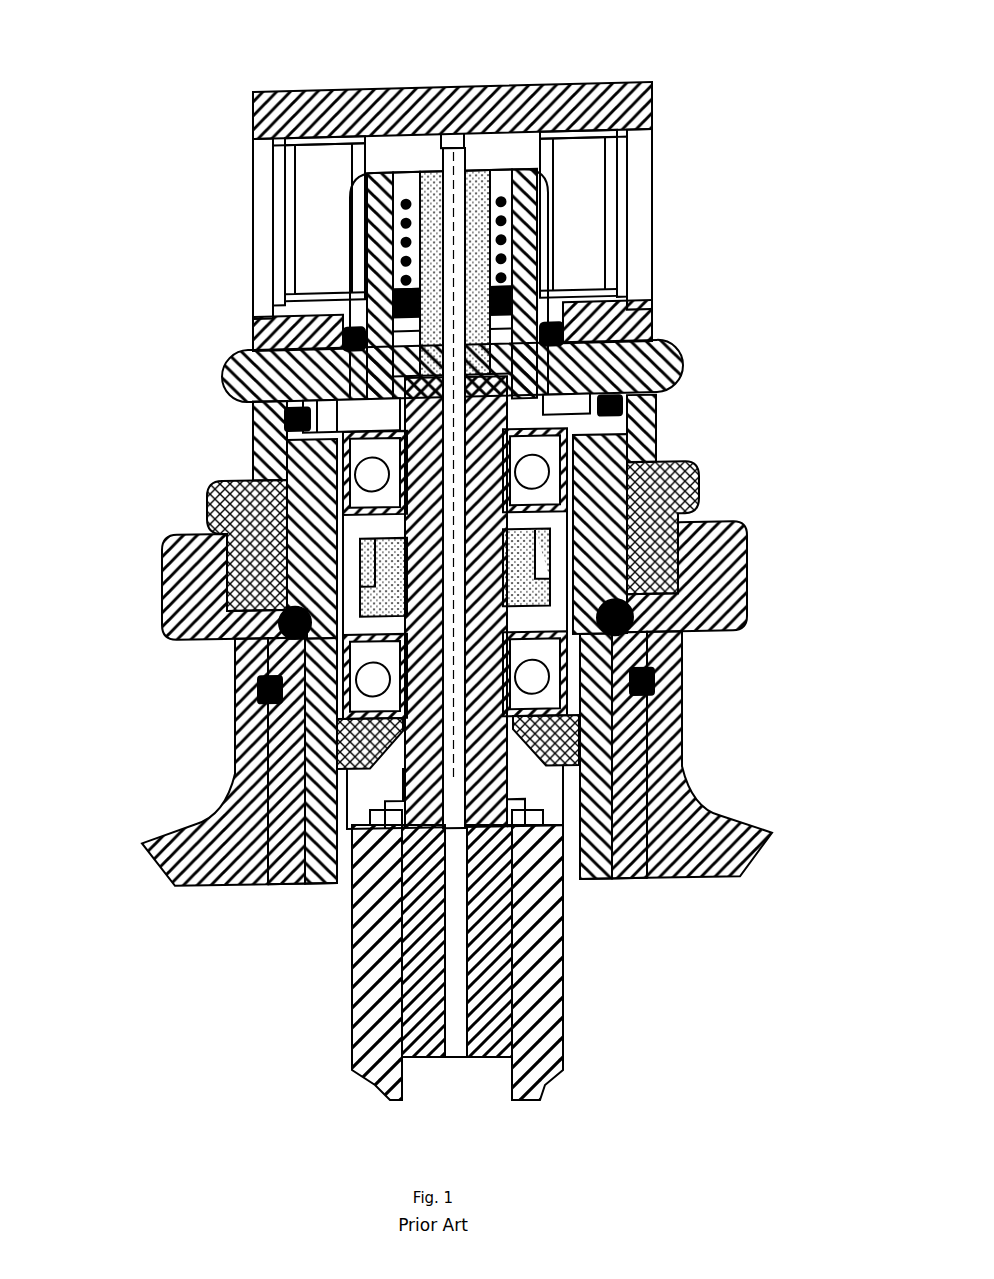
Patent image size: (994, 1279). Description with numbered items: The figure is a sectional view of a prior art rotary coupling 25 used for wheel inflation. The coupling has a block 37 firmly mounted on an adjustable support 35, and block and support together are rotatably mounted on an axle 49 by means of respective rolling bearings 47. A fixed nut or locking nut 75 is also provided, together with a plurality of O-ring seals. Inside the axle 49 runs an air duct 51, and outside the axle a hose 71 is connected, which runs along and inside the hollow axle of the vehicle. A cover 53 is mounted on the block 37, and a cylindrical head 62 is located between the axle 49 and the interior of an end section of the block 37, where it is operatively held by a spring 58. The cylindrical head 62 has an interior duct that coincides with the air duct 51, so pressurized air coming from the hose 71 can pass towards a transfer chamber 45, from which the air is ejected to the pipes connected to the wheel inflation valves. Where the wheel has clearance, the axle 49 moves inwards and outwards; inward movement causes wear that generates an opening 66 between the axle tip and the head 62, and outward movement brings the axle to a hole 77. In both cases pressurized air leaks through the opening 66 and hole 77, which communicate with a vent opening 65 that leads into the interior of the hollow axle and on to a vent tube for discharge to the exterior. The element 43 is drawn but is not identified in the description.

The rotary coupling 25 is at (170, 667).
The adjustable support 35 is at (751, 604).
The block 37 is at (676, 352).
The cap side wall 43 is at (640, 180).
The transfer chamber 45 is at (320, 215).
The rolling bearings 47 is at (656, 447).
The axle 49 is at (493, 913).
The air duct 51 is at (453, 973).
The cover 53 is at (375, 92).
The spring 58 is at (620, 82).
The cylindrical head 62 is at (655, 310).
The vent opening 65 is at (656, 390).
The opening 66 is at (656, 410).
The hose 71 is at (540, 1040).
The locking nut 75 is at (702, 490).
The hole 77 is at (520, 266).